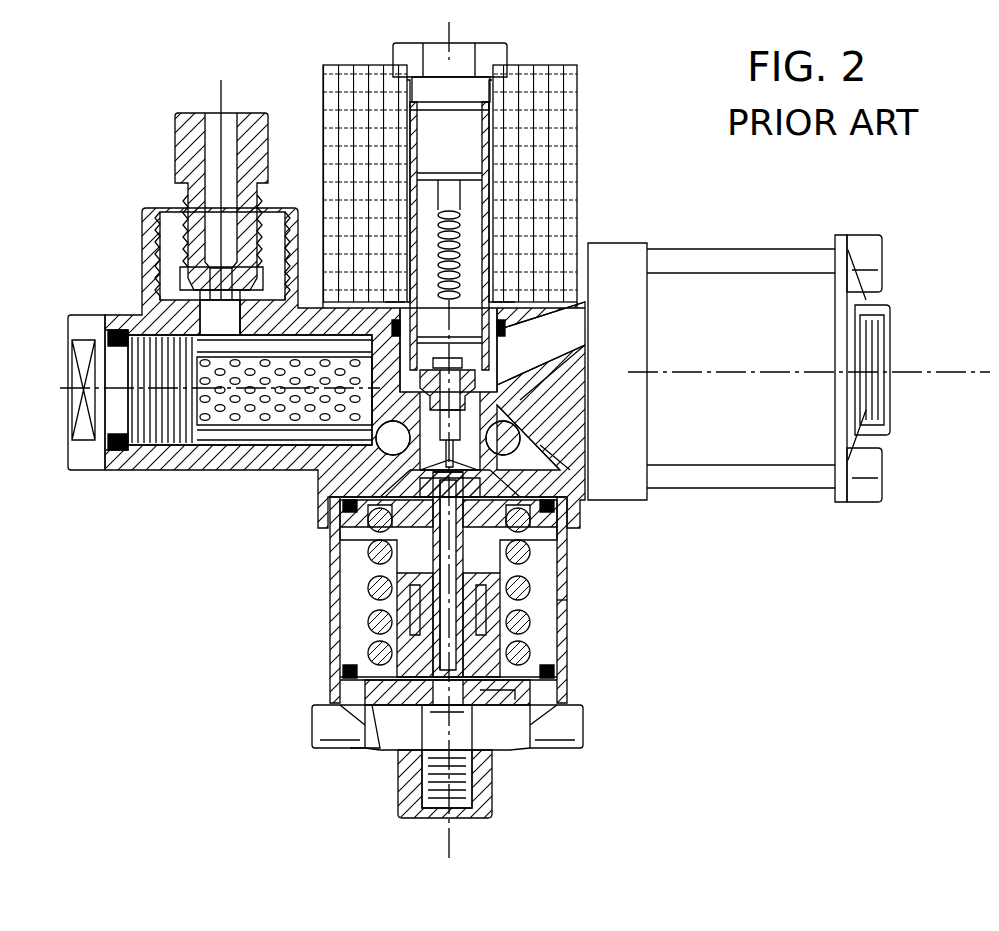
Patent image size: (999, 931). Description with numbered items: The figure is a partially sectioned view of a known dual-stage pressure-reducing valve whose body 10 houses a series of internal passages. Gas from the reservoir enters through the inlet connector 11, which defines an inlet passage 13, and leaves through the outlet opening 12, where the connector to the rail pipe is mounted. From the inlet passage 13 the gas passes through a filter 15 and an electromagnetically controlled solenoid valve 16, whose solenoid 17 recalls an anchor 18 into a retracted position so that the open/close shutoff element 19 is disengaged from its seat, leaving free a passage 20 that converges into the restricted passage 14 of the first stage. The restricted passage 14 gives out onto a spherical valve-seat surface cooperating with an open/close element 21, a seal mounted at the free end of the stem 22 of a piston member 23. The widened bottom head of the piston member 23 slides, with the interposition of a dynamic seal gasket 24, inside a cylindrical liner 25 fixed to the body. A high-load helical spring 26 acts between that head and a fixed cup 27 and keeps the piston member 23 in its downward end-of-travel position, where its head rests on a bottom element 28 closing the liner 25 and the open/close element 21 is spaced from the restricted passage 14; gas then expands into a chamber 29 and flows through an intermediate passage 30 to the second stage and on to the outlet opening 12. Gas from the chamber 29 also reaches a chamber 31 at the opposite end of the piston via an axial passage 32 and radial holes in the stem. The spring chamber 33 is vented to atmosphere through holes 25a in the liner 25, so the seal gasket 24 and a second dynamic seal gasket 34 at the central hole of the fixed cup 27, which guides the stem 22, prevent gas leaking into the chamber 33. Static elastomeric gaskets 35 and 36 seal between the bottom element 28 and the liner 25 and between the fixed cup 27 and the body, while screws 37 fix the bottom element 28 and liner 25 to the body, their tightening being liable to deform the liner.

The body of the valve 10 is at (113, 305).
The inlet connector 11 is at (172, 136).
The outlet opening 12 is at (890, 345).
The inlet passage 13 is at (215, 135).
The restricted passage 14 is at (330, 490).
The filter 15 is at (188, 382).
The solenoid valve 16 is at (506, 206).
The solenoid 17 is at (578, 222).
The anchor 18 is at (470, 230).
The open/close shutoff element 19 is at (490, 410).
The passage 20 is at (300, 470).
The open/close element 21 is at (518, 468).
The stem 22 is at (370, 545).
The piston member 23 is at (497, 692).
The seal gasket 24 is at (570, 690).
The cylindrical liner 25 is at (325, 605).
The holes 25a is at (568, 598).
The helical spring 26 is at (500, 632).
The fixed cup 27 is at (588, 508).
The bottom element 28 is at (385, 755).
The chamber 29 is at (325, 510).
The intermediate passage 30 is at (565, 440).
The chamber 31 is at (375, 745).
The axial passage 32 is at (463, 605).
The chamber 33 is at (330, 625).
The seal gasket 34 is at (570, 540).
The static gasket 35 is at (330, 680).
The static gasket 36 is at (576, 465).
The screws 37 is at (318, 745).